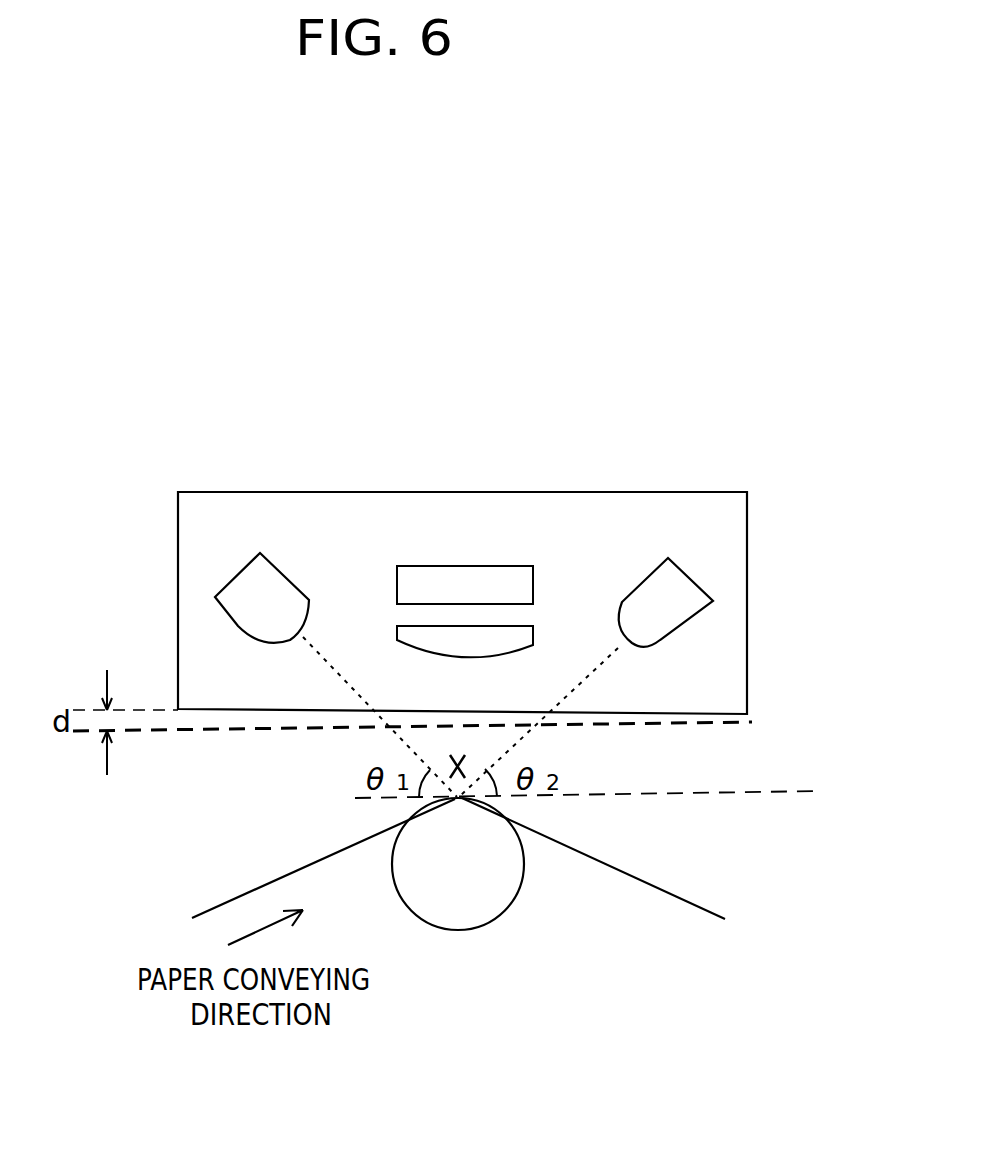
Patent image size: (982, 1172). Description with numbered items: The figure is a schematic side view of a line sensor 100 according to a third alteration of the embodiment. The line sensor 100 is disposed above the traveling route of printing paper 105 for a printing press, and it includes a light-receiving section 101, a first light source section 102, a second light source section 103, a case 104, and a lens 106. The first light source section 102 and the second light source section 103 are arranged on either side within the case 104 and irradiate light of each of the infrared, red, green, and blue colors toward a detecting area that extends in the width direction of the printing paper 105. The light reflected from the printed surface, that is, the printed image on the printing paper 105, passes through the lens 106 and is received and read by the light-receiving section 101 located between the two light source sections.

The line sensor 100 is at (352, 424).
The light-receiving section 101 is at (497, 572).
The first light source section 102 is at (246, 576).
The second light source section 103 is at (688, 586).
The case 104 is at (713, 492).
The printing paper 105 is at (632, 878).
The lens 106 is at (397, 636).